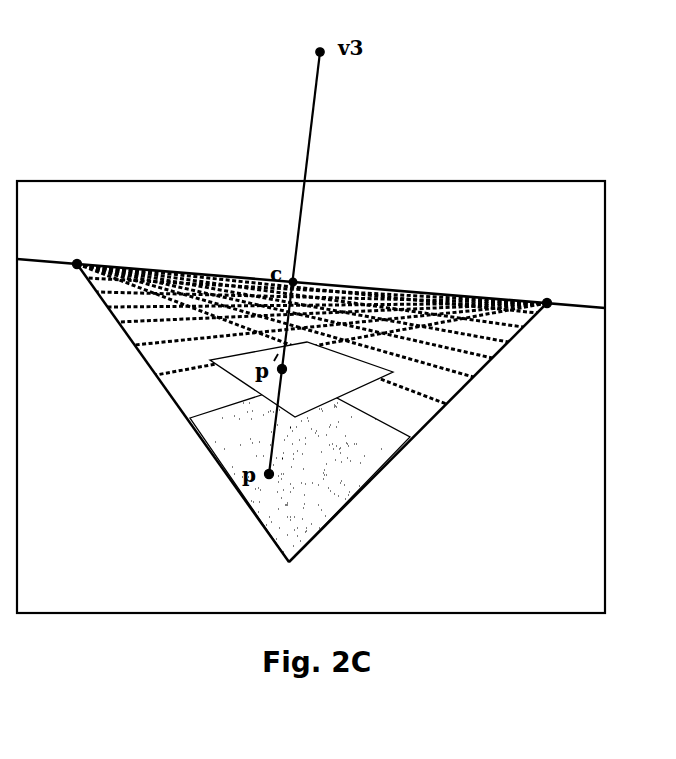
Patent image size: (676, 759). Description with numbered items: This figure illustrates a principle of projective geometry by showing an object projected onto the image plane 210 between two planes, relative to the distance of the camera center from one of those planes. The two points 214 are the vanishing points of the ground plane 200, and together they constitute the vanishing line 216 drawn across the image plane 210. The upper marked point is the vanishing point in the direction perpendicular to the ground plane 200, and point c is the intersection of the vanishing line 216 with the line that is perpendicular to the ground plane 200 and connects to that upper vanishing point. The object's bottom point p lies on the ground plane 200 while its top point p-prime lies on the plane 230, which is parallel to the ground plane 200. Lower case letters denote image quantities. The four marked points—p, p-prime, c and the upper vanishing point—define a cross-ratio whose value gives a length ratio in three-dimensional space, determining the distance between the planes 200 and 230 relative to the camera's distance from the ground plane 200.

The image plane 210 is at (90, 600).
The vanishing points 214 is at (315, 270).
The vanishing line 216 is at (393, 288).
The plane parallel to the reference plane 230 is at (333, 390).
The ground plane 200 is at (333, 487).